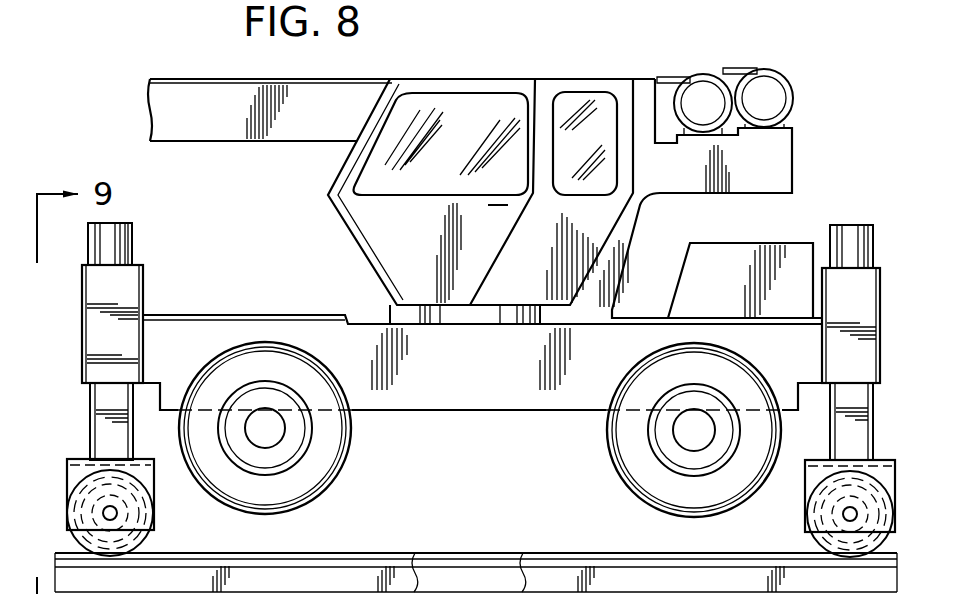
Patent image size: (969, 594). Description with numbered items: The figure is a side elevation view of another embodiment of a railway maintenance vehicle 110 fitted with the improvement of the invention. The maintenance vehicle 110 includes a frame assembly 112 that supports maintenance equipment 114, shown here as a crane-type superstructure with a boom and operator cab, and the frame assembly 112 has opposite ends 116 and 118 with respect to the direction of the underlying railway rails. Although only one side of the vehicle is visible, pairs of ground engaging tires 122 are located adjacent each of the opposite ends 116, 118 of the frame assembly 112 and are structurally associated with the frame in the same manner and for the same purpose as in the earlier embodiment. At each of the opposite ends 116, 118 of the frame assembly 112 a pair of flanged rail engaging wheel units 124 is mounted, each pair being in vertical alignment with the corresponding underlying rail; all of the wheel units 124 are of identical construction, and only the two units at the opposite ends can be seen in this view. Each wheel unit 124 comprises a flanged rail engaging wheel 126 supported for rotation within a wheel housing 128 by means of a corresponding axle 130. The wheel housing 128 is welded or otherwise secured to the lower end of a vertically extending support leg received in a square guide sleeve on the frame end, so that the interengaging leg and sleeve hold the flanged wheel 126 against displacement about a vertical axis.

The maintenance vehicle 110 is at (805, 144).
The frame assembly 112 is at (650, 257).
The maintenance equipment 114 is at (592, 71).
The end of frame assembly 116 is at (78, 302).
The end of frame assembly 118 is at (891, 318).
The ground engaging tires 122 is at (344, 469).
The flanged rail engaging wheel units 124 is at (80, 359).
The flanged rail engaging wheel 126 is at (66, 541).
The wheel housing 128 is at (77, 468).
The axle 130 is at (104, 511).